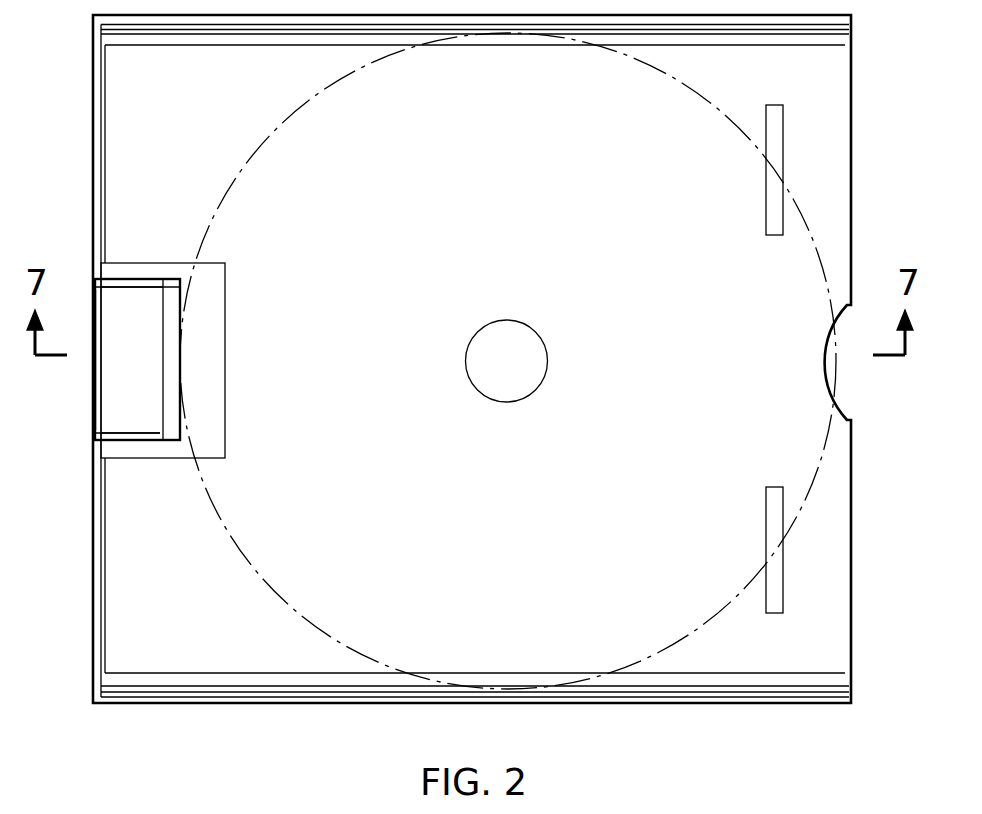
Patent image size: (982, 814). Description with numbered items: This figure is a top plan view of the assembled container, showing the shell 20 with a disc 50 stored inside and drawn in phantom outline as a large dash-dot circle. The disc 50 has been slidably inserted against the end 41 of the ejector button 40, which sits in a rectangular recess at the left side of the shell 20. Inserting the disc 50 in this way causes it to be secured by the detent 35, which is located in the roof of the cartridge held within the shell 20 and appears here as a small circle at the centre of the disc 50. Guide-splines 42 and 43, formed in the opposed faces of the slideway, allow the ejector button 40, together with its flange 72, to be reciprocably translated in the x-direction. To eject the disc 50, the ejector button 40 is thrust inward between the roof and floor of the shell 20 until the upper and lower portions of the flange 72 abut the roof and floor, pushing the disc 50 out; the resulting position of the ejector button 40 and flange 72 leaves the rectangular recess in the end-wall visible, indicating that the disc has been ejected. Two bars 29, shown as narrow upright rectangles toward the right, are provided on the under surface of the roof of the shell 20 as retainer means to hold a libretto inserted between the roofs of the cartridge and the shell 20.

The shell 20 is at (394, 527).
The bars 29 is at (766, 205).
The detent 35 is at (508, 320).
The ejector button 40 is at (150, 363).
The end 41 is at (225, 317).
The guide-spline 42 is at (160, 438).
The guide-spline 43 is at (157, 283).
The disc 50 is at (250, 575).
The flange 72 is at (98, 408).